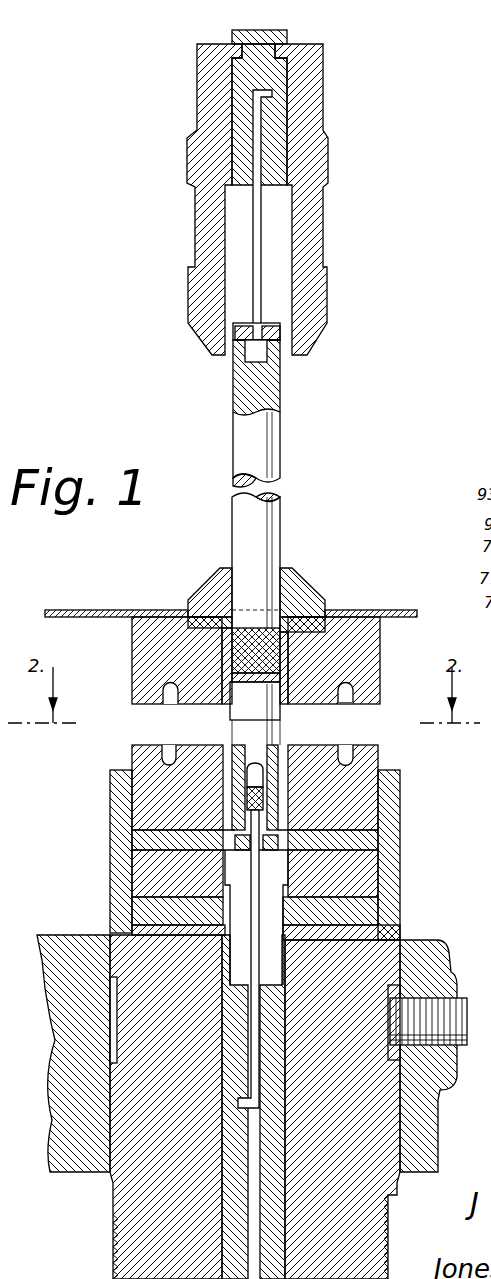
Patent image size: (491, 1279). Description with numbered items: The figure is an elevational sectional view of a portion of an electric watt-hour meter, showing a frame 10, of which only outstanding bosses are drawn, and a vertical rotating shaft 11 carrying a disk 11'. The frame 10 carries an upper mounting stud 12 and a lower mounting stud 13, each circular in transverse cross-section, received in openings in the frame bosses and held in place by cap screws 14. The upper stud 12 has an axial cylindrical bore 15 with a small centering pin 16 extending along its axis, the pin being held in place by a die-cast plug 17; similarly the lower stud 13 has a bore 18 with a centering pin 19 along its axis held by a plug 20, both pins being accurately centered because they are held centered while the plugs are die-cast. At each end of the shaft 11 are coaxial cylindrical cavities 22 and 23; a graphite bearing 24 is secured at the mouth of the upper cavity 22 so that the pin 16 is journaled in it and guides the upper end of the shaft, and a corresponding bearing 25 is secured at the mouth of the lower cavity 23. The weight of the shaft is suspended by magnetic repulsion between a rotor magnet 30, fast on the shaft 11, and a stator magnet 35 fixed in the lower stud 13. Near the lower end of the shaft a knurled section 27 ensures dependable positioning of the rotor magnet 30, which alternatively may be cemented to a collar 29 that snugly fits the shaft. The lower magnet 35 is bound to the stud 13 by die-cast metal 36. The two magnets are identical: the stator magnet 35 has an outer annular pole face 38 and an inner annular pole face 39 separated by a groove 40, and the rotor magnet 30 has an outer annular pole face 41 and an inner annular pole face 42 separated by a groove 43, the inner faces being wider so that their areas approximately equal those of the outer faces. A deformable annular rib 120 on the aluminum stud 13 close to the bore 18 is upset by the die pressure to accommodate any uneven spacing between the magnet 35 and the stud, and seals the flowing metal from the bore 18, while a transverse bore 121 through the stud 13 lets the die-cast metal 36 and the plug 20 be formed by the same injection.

The frame 10 is at (68, 1162).
The shaft 11 is at (282, 621).
The disk 11' is at (231, 591).
The upper mounting stud 12 is at (325, 309).
The lower mounting stud 13 is at (368, 859).
The cap screw 14 is at (462, 1008).
The axial bore 15 is at (228, 219).
The centering pin 16 is at (258, 249).
The plug 17 is at (287, 32).
The bore 18 is at (275, 863).
The centering pin 19 is at (253, 963).
The plug 20 is at (270, 1084).
The cavity 22 is at (283, 400).
The cavity 23 is at (248, 813).
The graphite bearing 24 is at (282, 372).
The bearing 25 is at (225, 856).
The knurled section 27 is at (255, 632).
The collar 29 is at (225, 661).
The rotor magnet 30 is at (381, 663).
The stator magnet 35 is at (372, 771).
The die-cast metal 36 is at (405, 901).
The outer annular pole face 38 is at (375, 747).
The inner annular pole face 39 is at (302, 749).
The groove 40 is at (340, 747).
The outer annular pole face 41 is at (377, 706).
The inner annular pole face 42 is at (291, 708).
The groove 43 is at (345, 707).
The deformable annular rib 120 is at (207, 836).
The bore 121 is at (150, 898).